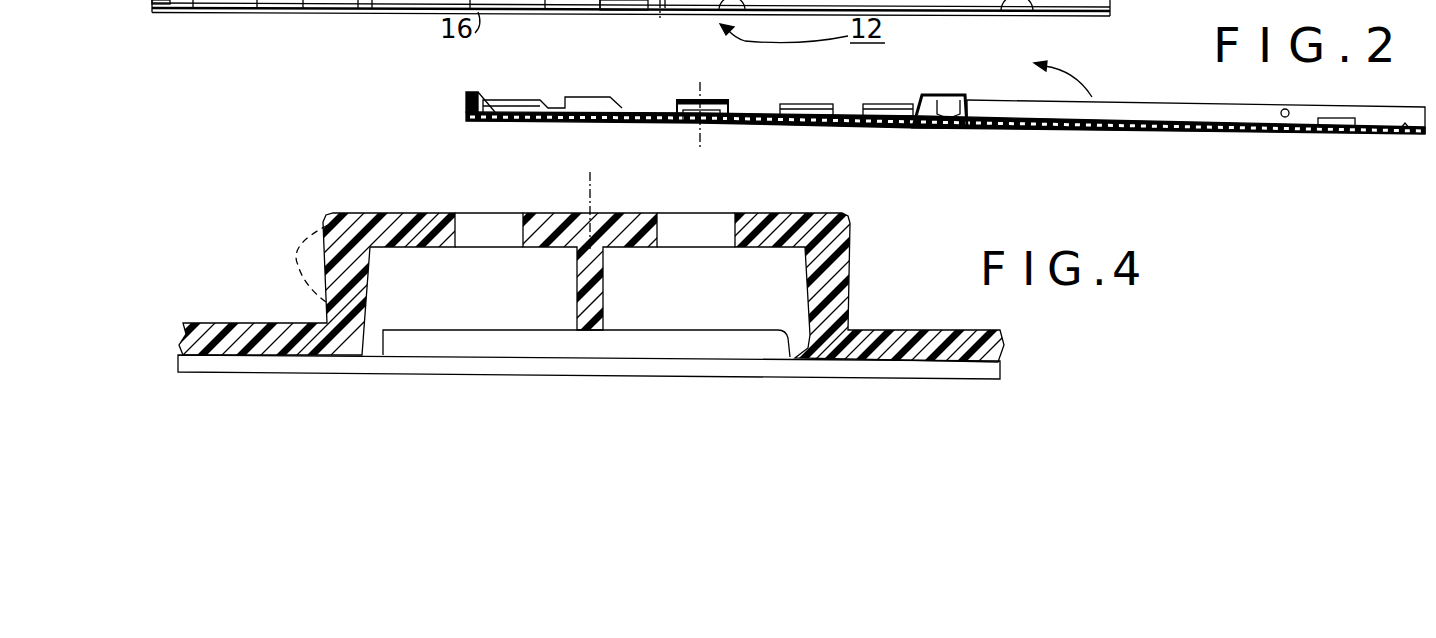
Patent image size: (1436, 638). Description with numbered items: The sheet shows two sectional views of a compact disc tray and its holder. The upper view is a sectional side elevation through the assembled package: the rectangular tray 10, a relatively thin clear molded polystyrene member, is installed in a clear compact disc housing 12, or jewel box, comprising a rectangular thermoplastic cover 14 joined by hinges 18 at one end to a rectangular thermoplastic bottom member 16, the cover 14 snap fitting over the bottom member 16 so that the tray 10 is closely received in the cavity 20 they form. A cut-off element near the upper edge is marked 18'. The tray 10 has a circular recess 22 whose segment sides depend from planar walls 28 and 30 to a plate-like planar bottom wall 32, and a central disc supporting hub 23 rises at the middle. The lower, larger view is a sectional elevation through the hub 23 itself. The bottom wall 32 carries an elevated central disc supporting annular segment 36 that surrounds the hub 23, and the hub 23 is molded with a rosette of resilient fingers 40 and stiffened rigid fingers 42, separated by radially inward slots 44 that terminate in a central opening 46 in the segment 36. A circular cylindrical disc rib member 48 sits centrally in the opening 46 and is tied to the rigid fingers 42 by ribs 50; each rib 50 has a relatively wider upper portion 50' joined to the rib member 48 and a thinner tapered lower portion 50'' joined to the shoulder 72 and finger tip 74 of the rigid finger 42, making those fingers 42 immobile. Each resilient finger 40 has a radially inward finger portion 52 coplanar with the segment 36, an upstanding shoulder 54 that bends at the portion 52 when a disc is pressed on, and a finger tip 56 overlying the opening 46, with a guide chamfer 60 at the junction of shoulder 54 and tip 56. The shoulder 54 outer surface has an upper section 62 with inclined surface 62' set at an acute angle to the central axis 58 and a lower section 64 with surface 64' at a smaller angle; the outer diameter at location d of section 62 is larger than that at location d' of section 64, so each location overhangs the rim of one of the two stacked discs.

In FIG. 2, the tray 10 is at (677, 98).
In FIG. 4, the tray 10 is at (950, 235).
In FIG. 2, the compact disc housing 12 is at (831, 126).
In FIG. 2, the cover 14 is at (1223, 130).
In FIG. 2, the bottom member 16 is at (560, 122).
In FIG. 2, the hinge 18 is at (962, 97).
In FIG. 2, the block member 18' is at (649, 29).
In FIG. 2, the cavity 20 is at (370, 13).
In FIG. 2, the circular recess 22 is at (532, 77).
In FIG. 2, the central disc supporting hub 23 is at (727, 101).
In FIG. 4, the central disc supporting hub 23 is at (298, 242).
In FIG. 2, the planar wall 28 is at (570, 12).
In FIG. 2, the planar wall 30 is at (196, 10).
In FIG. 4, the bottom wall 32 is at (520, 372).
In FIG. 4, the annular segment 36 is at (183, 330).
In FIG. 4, the resilient finger 40 is at (338, 214).
In FIG. 4, the rigid finger 42 is at (380, 325).
In FIG. 4, the slot 44 is at (297, 362).
In FIG. 4, the central opening 46 is at (838, 355).
In FIG. 4, the disc rib member 48 is at (604, 227).
In FIG. 4, the rib 50 is at (586, 294).
In FIG. 4, the upper portion of rib 50' is at (520, 204).
In FIG. 4, the tapered lower portion of rib 50'' is at (611, 355).
In FIG. 4, the finger portion 52 is at (257, 322).
In FIG. 4, the shoulder 54 is at (373, 263).
In FIG. 4, the finger tip 56 is at (418, 214).
In FIG. 2, the axis 58 is at (697, 147).
In FIG. 4, the axis 58 is at (569, 209).
In FIG. 4, the guide chamfer 60 is at (850, 218).
In FIG. 4, the inclined section 62 is at (870, 209).
In FIG. 4, the inclined surface 62' is at (882, 246).
In FIG. 4, the inclined section 64 is at (866, 301).
In FIG. 4, the inclined surface 64' is at (896, 275).
In FIG. 4, the shoulder 72 is at (292, 268).
In FIG. 4, the finger tip 74 is at (328, 213).
In FIG. 4, the location d is at (270, 249).
In FIG. 4, the location d' is at (286, 283).